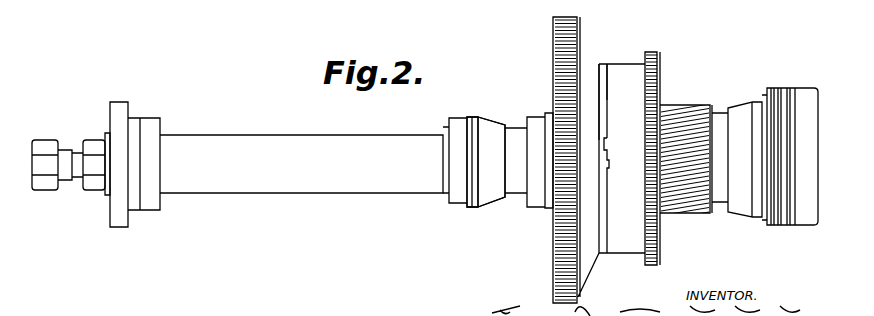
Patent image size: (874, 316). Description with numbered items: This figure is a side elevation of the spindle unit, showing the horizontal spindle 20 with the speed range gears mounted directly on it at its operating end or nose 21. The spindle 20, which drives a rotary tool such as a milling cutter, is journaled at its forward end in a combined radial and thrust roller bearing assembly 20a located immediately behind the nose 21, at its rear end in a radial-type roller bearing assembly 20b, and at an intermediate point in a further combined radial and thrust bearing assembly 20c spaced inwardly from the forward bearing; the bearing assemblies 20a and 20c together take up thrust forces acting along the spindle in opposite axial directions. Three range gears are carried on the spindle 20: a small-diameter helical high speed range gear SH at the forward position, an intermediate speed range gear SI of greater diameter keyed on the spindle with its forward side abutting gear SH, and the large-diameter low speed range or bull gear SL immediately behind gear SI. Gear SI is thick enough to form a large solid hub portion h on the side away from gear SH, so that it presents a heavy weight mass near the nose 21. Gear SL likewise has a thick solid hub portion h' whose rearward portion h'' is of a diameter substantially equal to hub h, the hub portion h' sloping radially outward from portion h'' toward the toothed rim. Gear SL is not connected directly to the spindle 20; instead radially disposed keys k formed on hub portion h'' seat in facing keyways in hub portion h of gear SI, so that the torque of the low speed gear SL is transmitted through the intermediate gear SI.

The spindle 20 is at (178, 131).
The roller bearing assembly 20a is at (733, 103).
The roller bearing assembly 20b is at (135, 122).
The roller bearing assembly 20c is at (493, 130).
The spindle nose 21 is at (800, 105).
The low speed range gear SL is at (555, 33).
The high speed range gear SH is at (673, 152).
The intermediate speed range gear SI is at (668, 105).
The hub portion h is at (622, 141).
The hub portion h' is at (587, 70).
The rearward hub portion h'' is at (611, 56).
The key k is at (611, 160).